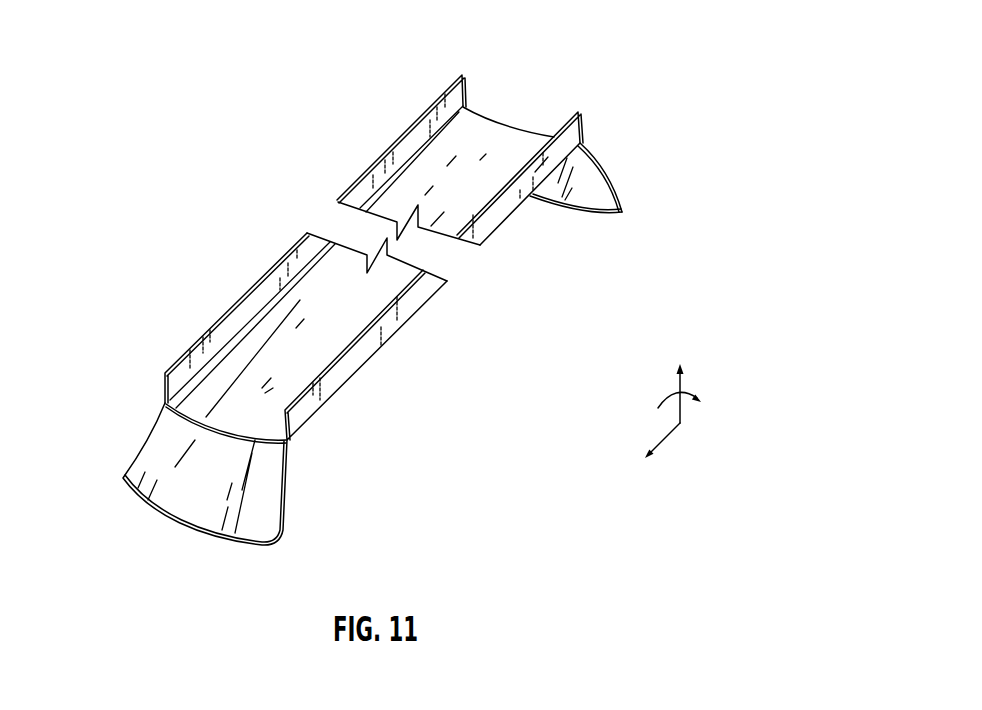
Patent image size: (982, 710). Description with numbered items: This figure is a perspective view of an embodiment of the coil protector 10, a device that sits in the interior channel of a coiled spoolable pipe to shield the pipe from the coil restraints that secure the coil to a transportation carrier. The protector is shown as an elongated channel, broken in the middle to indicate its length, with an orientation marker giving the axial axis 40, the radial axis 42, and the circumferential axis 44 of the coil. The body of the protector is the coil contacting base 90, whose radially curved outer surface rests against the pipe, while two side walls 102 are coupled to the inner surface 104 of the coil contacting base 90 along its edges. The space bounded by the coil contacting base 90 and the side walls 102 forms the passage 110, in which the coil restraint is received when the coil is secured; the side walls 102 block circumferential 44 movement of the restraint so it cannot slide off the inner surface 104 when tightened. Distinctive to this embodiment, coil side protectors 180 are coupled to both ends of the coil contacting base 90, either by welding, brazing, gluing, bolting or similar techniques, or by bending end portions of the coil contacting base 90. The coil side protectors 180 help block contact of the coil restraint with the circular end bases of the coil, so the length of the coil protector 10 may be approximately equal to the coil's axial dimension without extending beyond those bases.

The coil protector 10 is at (578, 62).
The passage 110 is at (513, 117).
The coil contacting base 90 is at (275, 432).
The side wall 102 is at (271, 270).
The inner surface 104 is at (350, 330).
The coil side protector 180 is at (178, 505).
The axial axis 40 is at (665, 442).
The radial axis 42 is at (682, 407).
The circumferential axis 44 is at (675, 392).